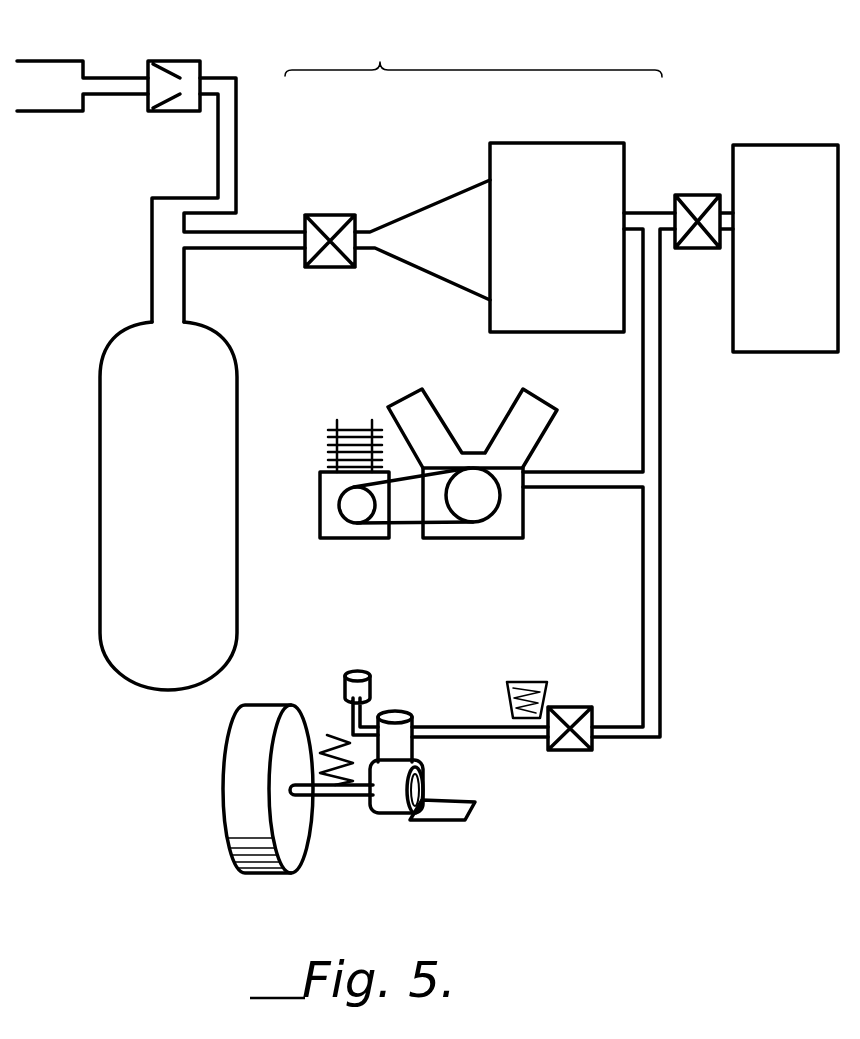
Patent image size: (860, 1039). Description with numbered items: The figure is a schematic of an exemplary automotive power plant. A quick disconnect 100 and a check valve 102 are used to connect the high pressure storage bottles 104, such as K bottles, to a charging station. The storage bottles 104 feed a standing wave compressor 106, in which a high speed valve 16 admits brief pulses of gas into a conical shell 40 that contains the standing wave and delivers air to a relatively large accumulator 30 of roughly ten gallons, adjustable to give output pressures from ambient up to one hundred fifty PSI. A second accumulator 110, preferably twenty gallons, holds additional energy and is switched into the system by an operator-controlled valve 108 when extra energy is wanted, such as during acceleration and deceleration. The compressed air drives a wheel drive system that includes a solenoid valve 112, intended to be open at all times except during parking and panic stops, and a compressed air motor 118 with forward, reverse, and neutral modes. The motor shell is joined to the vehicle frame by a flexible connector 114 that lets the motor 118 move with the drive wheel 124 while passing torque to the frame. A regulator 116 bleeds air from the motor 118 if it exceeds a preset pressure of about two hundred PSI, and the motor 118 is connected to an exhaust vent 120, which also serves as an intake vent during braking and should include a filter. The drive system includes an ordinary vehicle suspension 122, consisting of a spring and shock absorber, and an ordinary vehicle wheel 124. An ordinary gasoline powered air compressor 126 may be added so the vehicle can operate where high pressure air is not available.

The quick disconnect 100 is at (46, 61).
The check valve 102 is at (193, 61).
The storage bottles 104 is at (192, 446).
The standing wave compressor 106 is at (473, 54).
The high speed valve 16 is at (326, 215).
The conical shell 40 is at (437, 207).
The accumulator 30 is at (570, 143).
The valve 108 is at (696, 195).
The second accumulator 110 is at (806, 264).
The gasoline powered air compressor 126 is at (475, 545).
The vehicle wheel 124 is at (265, 705).
The vehicle suspension 122 is at (327, 735).
The exhaust vent 120 is at (362, 670).
The compressed air motor 118 is at (407, 708).
The regulator 116 is at (507, 690).
The solenoid valve 112 is at (582, 707).
The flexible connector 114 is at (475, 803).